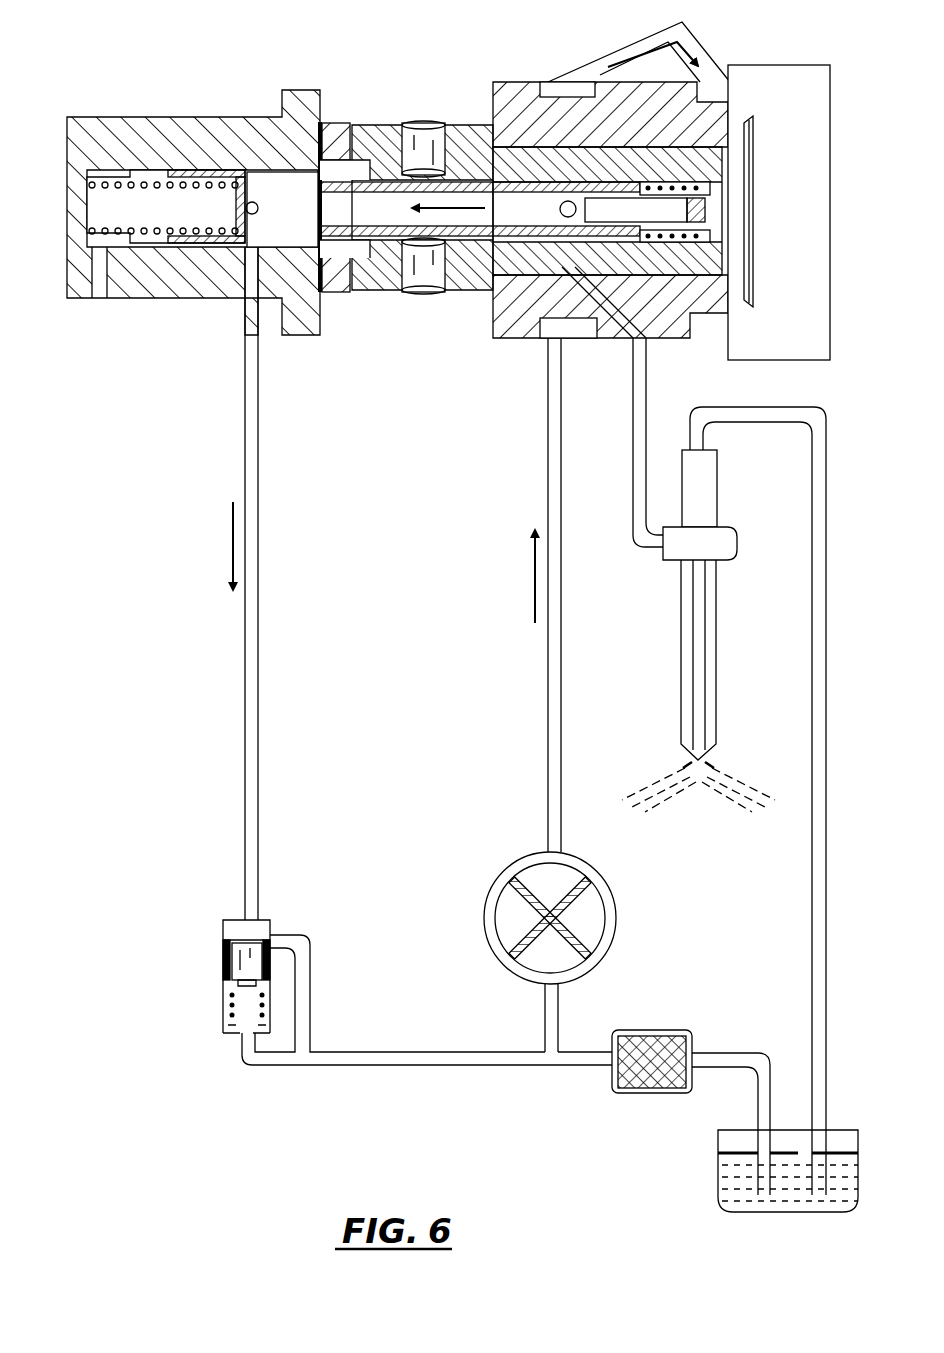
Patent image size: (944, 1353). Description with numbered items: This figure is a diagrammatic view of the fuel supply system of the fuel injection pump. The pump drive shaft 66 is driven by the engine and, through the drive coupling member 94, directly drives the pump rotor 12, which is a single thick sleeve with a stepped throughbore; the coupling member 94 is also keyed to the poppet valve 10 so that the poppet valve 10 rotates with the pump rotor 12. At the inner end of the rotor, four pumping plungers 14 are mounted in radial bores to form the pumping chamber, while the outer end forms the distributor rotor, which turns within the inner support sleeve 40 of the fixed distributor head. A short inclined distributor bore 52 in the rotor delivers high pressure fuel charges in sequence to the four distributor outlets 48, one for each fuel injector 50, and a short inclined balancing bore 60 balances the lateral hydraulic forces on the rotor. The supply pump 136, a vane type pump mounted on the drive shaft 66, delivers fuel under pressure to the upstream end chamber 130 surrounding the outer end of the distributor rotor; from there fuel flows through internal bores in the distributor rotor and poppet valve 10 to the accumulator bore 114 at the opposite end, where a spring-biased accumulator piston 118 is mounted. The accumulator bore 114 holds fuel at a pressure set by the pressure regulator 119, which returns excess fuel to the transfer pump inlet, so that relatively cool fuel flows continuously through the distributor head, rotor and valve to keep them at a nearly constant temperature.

The pump drive shaft 66 is at (117, 117).
The accumulator piston 118 is at (200, 170).
The drive coupling member 94 is at (320, 147).
The accumulator bore 114 is at (300, 220).
The pumping plunger 14 is at (425, 122).
The inner support sleeve 40 is at (665, 115).
The upstream end chamber 130 is at (728, 130).
The balancing bore 60 is at (542, 155).
The pump rotor 12 is at (648, 173).
The poppet valve 10 is at (578, 242).
The distributor bore 52 is at (519, 279).
The distributor outlet 48 is at (622, 304).
The fuel injector 50 is at (681, 642).
The supply pump 136 is at (494, 864).
The pressure regulator 119 is at (216, 956).